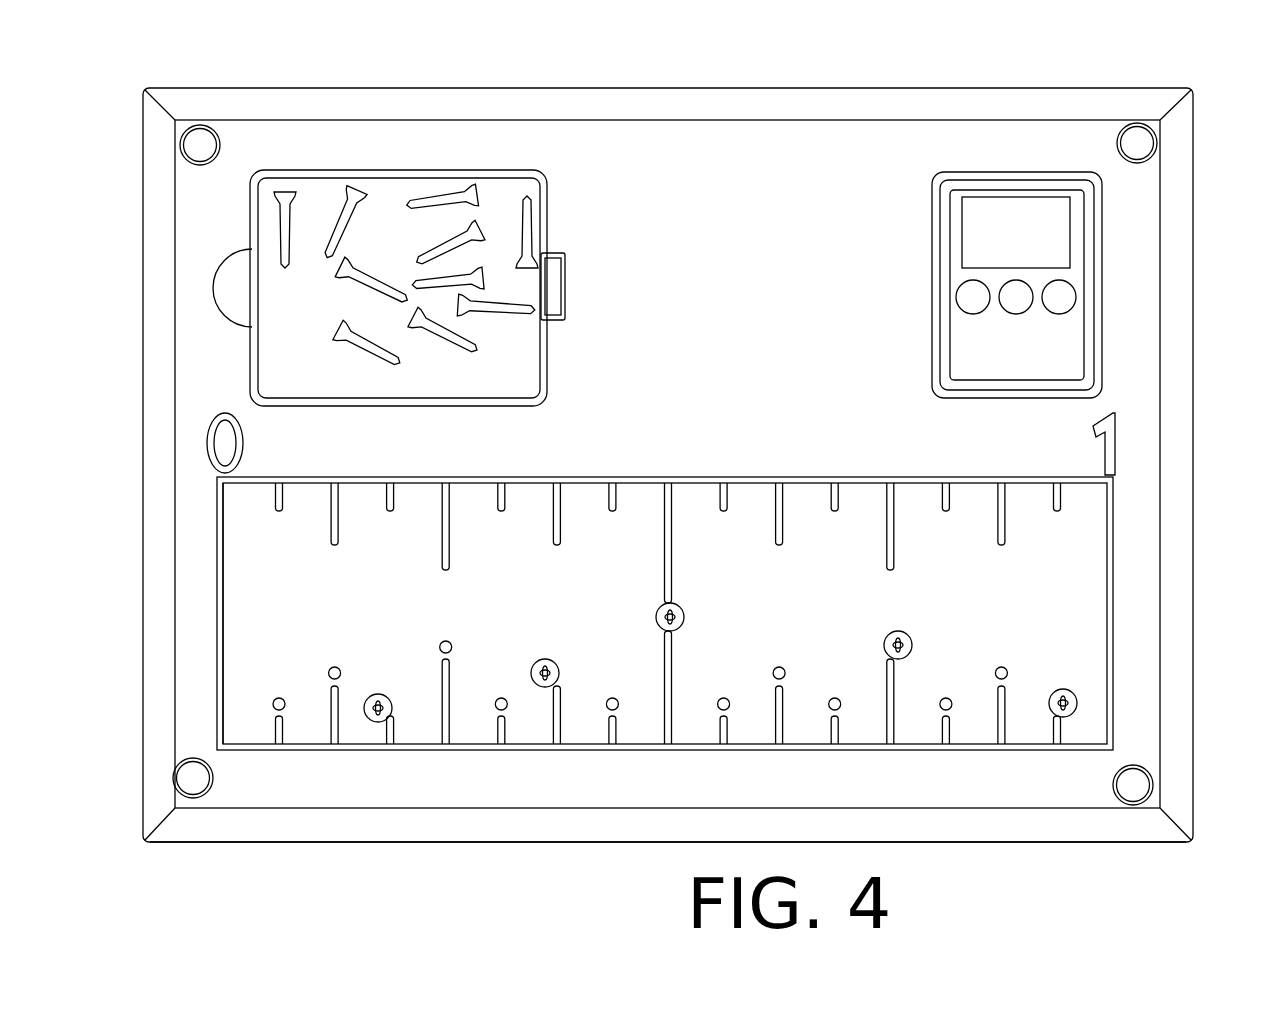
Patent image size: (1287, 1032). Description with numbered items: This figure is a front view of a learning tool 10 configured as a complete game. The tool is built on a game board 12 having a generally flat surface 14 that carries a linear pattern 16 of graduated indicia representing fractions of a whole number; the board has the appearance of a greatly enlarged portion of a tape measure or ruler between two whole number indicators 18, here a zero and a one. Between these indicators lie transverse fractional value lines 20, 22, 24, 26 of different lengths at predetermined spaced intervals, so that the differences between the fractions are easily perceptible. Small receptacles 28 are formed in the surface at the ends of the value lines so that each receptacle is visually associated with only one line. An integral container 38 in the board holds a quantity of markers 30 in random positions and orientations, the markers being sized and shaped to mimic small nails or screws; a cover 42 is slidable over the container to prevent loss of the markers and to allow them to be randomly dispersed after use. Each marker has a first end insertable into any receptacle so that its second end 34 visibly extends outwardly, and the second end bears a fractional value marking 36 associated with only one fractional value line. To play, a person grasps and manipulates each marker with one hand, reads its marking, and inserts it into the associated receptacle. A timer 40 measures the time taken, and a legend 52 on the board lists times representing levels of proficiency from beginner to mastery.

The learning tool 10 is at (292, 862).
The board 12 is at (1196, 745).
The surface 14 is at (587, 828).
The linear pattern 16 is at (307, 752).
The whole number indicator 18 is at (220, 643).
The fractional value line 20 is at (672, 561).
The fractional value line 22 is at (449, 524).
The fractional value line 24 is at (562, 521).
The fractional value line 26 is at (274, 722).
The receptacle 28 is at (274, 700).
The marker 30 is at (347, 185).
The second end 34 is at (683, 608).
The fractional value marking 36 is at (657, 610).
The container 38 is at (315, 380).
The timer 40 is at (1015, 172).
The cover 42 is at (523, 357).
The legend 52 is at (730, 190).